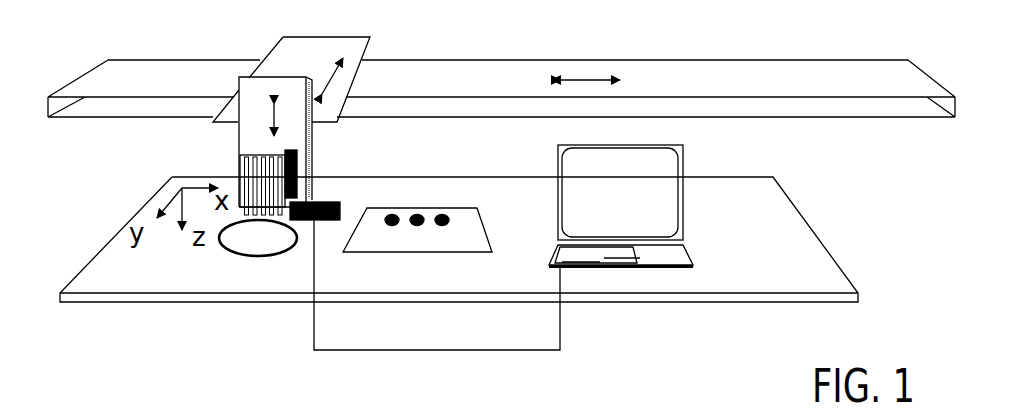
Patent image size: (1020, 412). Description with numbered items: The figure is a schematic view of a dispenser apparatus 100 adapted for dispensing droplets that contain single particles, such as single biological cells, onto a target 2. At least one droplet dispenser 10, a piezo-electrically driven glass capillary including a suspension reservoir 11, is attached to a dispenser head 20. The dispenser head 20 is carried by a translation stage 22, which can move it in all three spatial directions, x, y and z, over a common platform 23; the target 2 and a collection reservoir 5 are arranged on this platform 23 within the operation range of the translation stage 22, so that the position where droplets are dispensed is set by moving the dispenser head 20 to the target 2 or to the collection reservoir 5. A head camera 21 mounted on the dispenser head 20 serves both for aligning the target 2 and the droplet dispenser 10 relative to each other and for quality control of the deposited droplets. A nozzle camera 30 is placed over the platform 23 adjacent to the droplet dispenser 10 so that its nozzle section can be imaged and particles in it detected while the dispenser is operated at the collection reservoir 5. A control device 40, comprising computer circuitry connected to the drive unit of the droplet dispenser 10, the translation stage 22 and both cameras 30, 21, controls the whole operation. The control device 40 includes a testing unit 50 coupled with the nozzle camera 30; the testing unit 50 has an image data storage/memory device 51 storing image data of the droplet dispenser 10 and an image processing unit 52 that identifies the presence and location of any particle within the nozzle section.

The dispenser apparatus 100 is at (125, 42).
The dispenser head 20 is at (250, 97).
The translation stage 22 is at (363, 70).
The droplet dispenser 10 is at (248, 190).
The head camera 21 is at (299, 183).
The nozzle camera 30 is at (342, 208).
The platform 23 is at (810, 280).
The collection reservoir 5 is at (240, 248).
The target 2 is at (422, 248).
The control device 40 is at (685, 252).
The testing unit 50 is at (568, 252).
The image data storage/memory device 51 is at (580, 268).
The image processing unit 52 is at (630, 268).
The suspension reservoir 11 is at (492, 411).